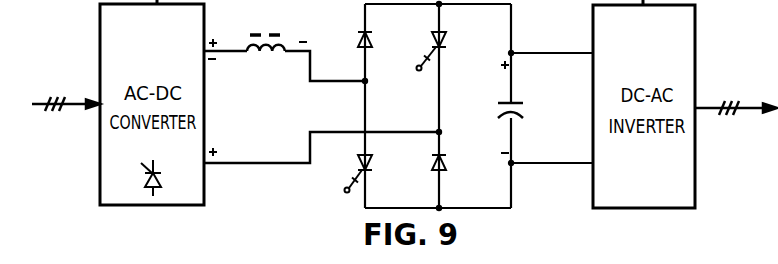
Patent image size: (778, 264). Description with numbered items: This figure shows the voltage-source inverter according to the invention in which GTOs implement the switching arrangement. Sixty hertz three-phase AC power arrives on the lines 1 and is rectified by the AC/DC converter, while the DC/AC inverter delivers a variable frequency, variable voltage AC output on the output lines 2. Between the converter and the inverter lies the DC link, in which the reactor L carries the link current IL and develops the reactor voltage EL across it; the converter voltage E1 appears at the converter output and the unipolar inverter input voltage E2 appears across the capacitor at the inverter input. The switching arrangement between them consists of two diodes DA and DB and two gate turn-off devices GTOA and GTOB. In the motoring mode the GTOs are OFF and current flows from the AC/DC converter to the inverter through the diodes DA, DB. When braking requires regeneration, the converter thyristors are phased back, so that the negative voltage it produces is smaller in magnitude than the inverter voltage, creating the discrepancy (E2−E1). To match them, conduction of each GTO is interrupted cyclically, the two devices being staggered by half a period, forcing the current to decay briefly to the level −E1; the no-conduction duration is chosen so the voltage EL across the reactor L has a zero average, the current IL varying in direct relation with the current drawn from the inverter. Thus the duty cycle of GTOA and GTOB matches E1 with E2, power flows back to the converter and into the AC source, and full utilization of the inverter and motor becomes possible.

The lines 1 is at (43, 101).
The output lines 2 is at (717, 107).
The reactor L is at (299, 39).
The voltage across the reactor EL is at (221, 32).
The converter voltage E1 is at (218, 62).
The current in the reactor IL is at (323, 90).
The diode DA is at (360, 36).
The diode DB is at (445, 172).
The GTO GTOA is at (369, 160).
The GTO GTOB is at (446, 30).
The unipolar inverter input voltage E2 is at (496, 63).